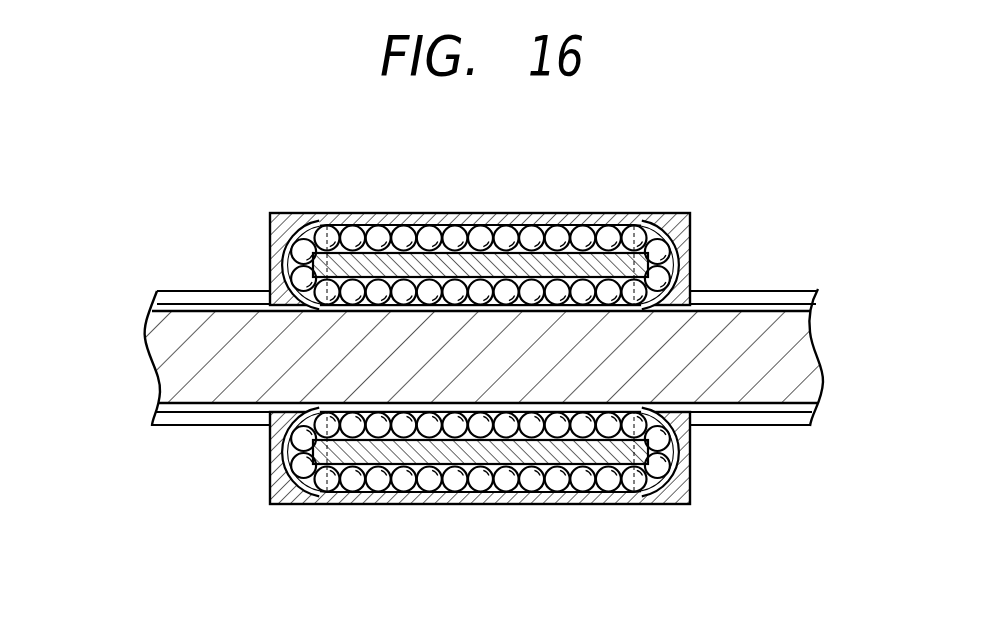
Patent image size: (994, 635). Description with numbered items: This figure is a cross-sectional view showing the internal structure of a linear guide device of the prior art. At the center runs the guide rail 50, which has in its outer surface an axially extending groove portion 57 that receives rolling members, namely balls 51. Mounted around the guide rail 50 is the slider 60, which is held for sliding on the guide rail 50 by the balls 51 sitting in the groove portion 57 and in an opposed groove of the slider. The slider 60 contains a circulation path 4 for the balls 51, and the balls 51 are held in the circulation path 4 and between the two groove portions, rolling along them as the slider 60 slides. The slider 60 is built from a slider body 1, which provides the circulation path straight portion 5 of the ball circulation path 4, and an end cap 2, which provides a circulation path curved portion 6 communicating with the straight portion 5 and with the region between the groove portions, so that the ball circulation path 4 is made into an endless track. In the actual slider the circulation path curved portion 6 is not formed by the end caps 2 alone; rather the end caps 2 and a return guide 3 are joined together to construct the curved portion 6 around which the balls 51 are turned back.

The slider body 1 is at (620, 215).
The end cap 2 is at (668, 215).
The return guide 3 is at (270, 459).
The circulation path 4 is at (484, 356).
The circulation path straight portion 5 is at (363, 219).
The circulation path curved portion 6 is at (270, 255).
The guide rail 50 is at (800, 348).
The balls 51 is at (485, 480).
The groove portion 57 is at (788, 288).
The slider 60 is at (492, 300).